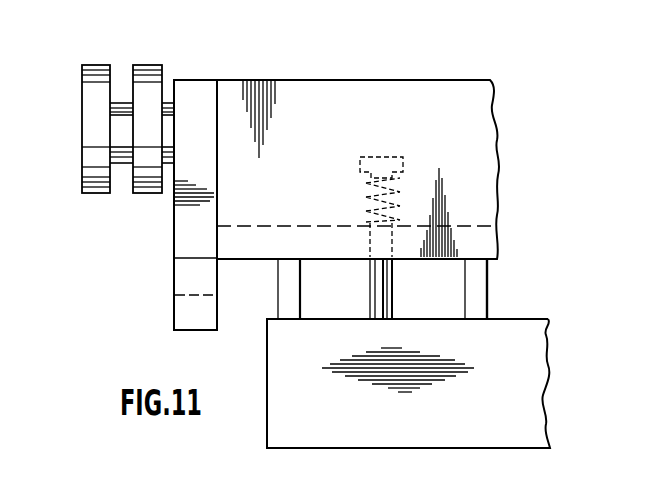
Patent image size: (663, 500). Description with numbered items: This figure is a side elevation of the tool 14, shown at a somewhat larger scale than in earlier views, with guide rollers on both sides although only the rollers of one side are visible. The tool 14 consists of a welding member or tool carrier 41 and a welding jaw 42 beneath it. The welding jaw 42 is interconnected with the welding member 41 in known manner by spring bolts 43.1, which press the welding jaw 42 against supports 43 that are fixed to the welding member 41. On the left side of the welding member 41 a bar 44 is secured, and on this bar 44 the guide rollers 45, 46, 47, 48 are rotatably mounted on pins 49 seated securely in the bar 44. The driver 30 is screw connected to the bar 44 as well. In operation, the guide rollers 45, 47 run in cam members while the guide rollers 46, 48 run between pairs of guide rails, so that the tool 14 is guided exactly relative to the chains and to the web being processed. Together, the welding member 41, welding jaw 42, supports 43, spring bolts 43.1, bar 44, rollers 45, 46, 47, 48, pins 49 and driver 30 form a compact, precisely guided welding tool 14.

The tool 14 is at (517, 82).
The driver 30 is at (191, 276).
The welding member 41 is at (337, 95).
The welding jaw 42 is at (517, 425).
The supports 43 is at (479, 296).
The spring bolts 43.1 is at (395, 281).
The bar 44 is at (197, 94).
The guide roller 45 is at (94, 86).
The guide roller 46 is at (146, 86).
The guide roller 47 is at (71, 106).
The guide roller 48 is at (141, 106).
The pins 49 is at (123, 134).